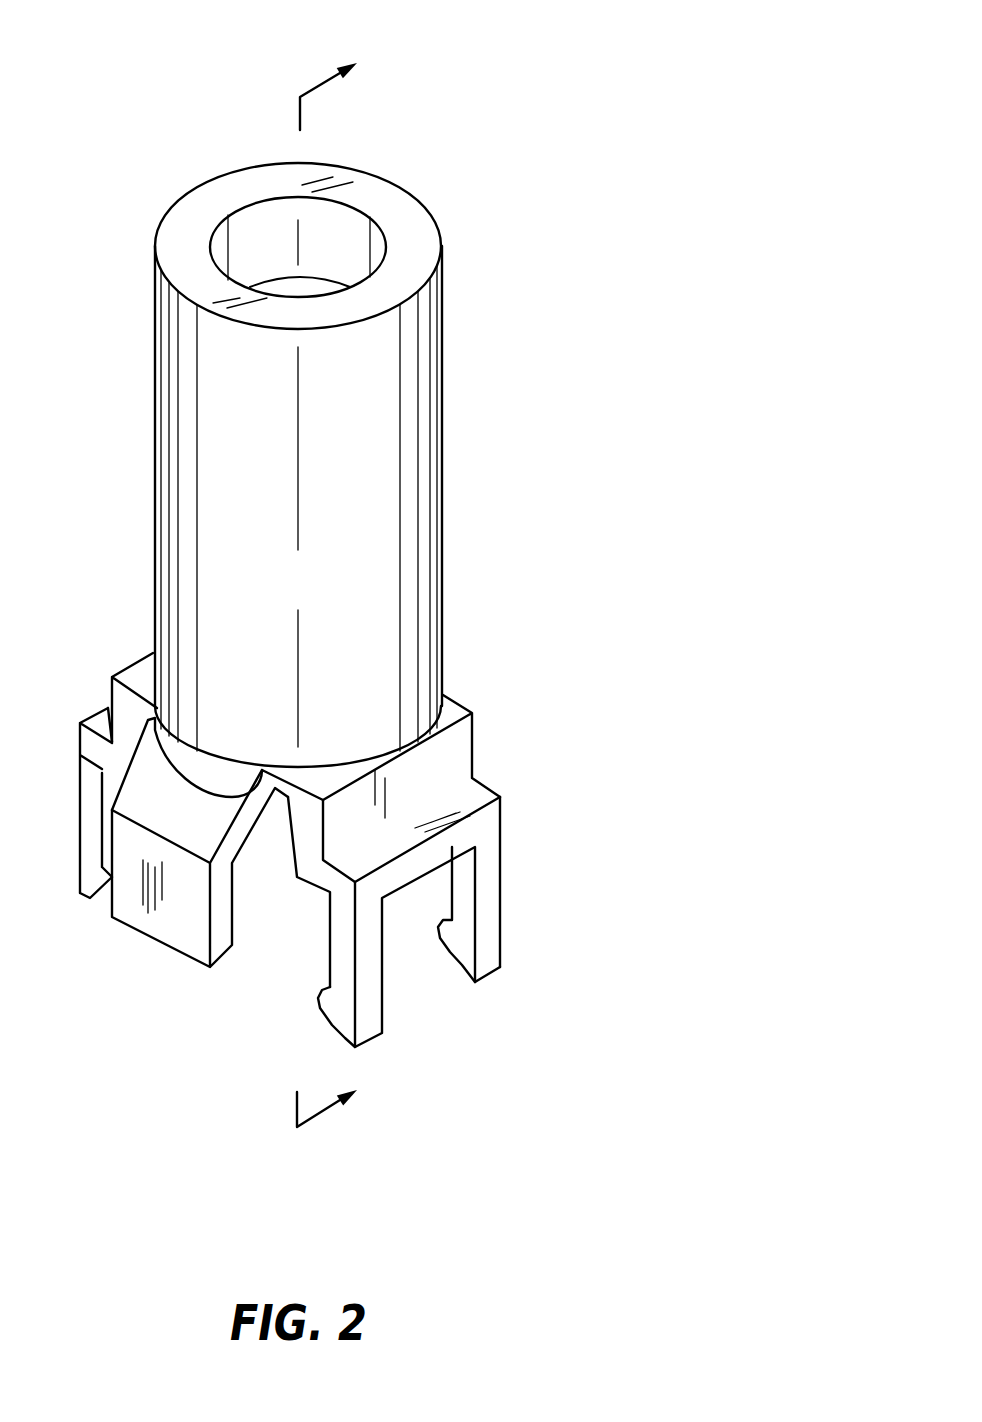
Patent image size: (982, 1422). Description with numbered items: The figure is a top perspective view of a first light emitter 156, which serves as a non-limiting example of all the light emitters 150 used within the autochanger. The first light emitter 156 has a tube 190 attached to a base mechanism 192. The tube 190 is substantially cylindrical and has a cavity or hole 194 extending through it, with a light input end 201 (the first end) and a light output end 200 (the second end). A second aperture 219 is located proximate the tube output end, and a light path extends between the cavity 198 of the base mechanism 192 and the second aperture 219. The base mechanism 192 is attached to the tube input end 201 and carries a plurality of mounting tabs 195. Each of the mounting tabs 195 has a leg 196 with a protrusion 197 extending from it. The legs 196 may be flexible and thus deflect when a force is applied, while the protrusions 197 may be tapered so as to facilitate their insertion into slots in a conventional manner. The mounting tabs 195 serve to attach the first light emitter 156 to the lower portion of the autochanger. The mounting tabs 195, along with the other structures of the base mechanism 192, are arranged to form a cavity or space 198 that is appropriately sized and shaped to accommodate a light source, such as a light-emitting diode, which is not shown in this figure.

The light emitter 150 is at (370, 592).
The first light emitter 156 is at (347, 604).
The tube 190 is at (357, 428).
The base mechanism 192 is at (347, 892).
The hole 194 is at (253, 199).
The mounting tabs 195 is at (503, 1000).
The leg 196 is at (507, 878).
The protrusion 197 is at (450, 957).
The cavity 198 is at (270, 938).
The light output end 200 is at (443, 289).
The light input end 201 is at (441, 669).
The second aperture 219 is at (360, 214).